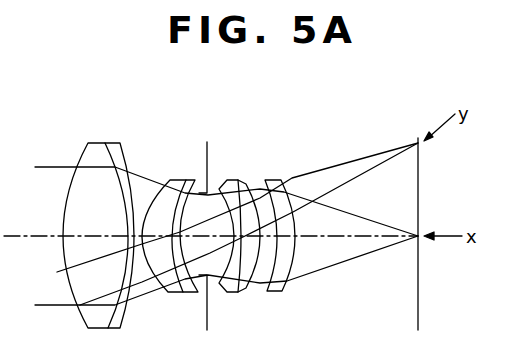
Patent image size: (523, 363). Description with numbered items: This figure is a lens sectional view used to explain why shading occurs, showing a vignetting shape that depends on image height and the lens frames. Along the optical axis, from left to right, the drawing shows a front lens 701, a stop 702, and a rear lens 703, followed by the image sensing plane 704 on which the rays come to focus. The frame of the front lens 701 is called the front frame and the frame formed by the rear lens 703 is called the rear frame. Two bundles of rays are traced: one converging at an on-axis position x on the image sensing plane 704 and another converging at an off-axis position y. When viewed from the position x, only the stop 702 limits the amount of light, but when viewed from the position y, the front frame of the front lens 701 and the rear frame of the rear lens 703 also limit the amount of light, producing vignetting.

The front lens 701 is at (113, 142).
The stop 702 is at (207, 142).
The rear lens 703 is at (269, 178).
The image sensing plane 704 is at (420, 192).